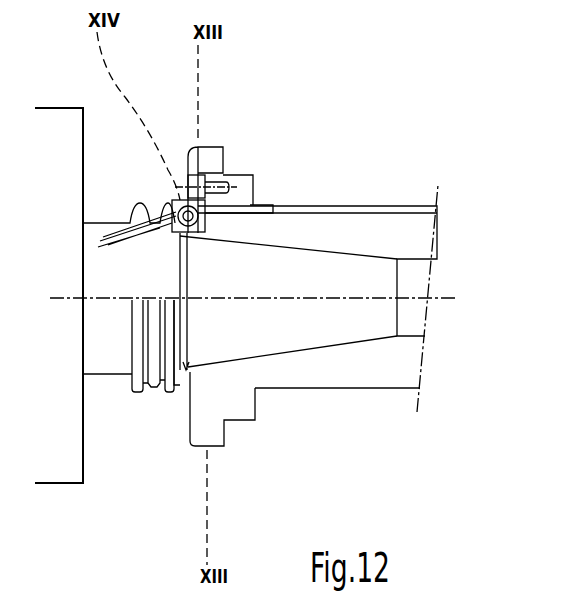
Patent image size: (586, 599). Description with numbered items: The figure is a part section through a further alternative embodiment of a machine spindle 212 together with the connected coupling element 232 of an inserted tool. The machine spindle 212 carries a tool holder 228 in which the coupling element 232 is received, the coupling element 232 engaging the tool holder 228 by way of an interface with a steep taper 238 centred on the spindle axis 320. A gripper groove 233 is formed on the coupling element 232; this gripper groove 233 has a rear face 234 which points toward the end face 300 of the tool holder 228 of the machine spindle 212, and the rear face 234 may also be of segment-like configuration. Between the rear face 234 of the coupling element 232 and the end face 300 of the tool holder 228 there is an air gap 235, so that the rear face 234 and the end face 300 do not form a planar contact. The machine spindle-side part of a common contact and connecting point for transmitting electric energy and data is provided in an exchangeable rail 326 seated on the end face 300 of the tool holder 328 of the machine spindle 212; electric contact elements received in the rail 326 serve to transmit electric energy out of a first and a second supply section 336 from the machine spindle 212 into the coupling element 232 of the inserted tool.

The machine spindle 212 is at (372, 375).
The tool holder 228 is at (228, 410).
The coupling element 232 is at (106, 365).
The gripper groove 233 is at (158, 390).
The rear face 234 is at (190, 369).
The air gap 235 is at (185, 385).
The steep taper 238 is at (323, 266).
The end face 300 is at (188, 380).
The spindle axis 320 is at (452, 298).
The exchangeable rail 326 is at (192, 147).
The tool holder 328 is at (226, 175).
The supply section 336 is at (260, 207).